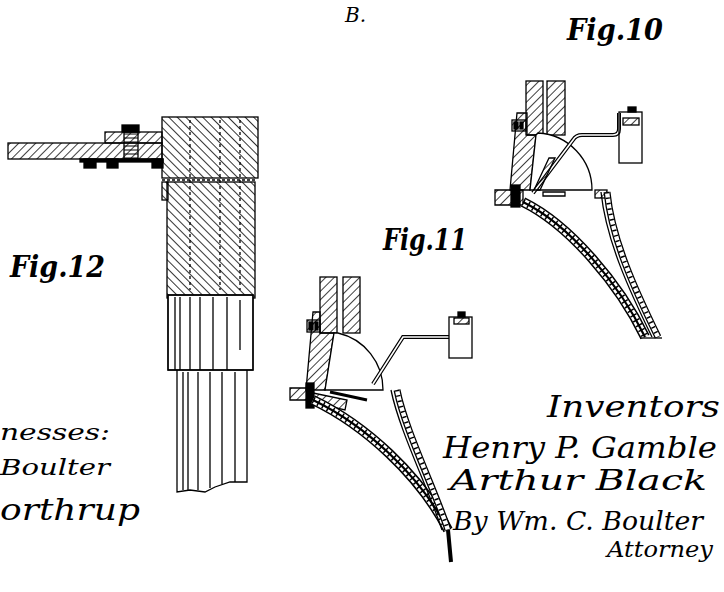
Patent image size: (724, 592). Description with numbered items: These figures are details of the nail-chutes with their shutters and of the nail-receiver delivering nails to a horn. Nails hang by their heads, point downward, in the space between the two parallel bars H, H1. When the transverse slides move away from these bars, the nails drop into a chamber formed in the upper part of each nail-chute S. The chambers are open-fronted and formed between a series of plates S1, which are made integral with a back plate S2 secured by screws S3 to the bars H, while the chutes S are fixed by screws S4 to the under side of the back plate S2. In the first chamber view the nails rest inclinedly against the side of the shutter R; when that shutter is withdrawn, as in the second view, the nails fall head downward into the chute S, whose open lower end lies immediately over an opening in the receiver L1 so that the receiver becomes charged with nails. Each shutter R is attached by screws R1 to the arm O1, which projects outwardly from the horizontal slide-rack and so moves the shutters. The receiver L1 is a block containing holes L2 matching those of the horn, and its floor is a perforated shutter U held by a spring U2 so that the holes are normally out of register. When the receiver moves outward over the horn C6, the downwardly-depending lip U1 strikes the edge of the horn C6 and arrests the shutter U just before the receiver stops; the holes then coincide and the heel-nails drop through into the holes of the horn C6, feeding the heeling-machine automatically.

In FIG. 12, the receiver L1 is at (197, 117).
In FIG. 12, the holes L2 is at (240, 117).
In FIG. 12, the shutter U is at (165, 185).
In FIG. 12, the lip U1 is at (166, 195).
In FIG. 12, the spring U2 is at (156, 168).
In FIG. 12, the horn C6 is at (257, 183).
In FIG. 11, the bar H is at (325, 277).
In FIG. 10, the bar H is at (526, 101).
In FIG. 11, the bar H1 is at (351, 277).
In FIG. 10, the bar H1 is at (549, 81).
In FIG. 11, the nail-chute S is at (386, 412).
In FIG. 10, the nail-chute S is at (612, 226).
In FIG. 11, the plates S1 is at (352, 363).
In FIG. 10, the plates S1 is at (566, 184).
In FIG. 11, the back plate S2 is at (311, 363).
In FIG. 10, the back plate S2 is at (512, 167).
In FIG. 11, the screws S3 is at (307, 321).
In FIG. 10, the screws S3 is at (512, 127).
In FIG. 11, the screws S4 is at (309, 406).
In FIG. 10, the screws S4 is at (514, 205).
In FIG. 11, the shutter R is at (421, 337).
In FIG. 10, the shutter R is at (590, 135).
In FIG. 11, the screws R1 is at (466, 310).
In FIG. 10, the screws R1 is at (630, 108).
In FIG. 11, the arm O1 is at (466, 343).
In FIG. 10, the arm O1 is at (630, 150).